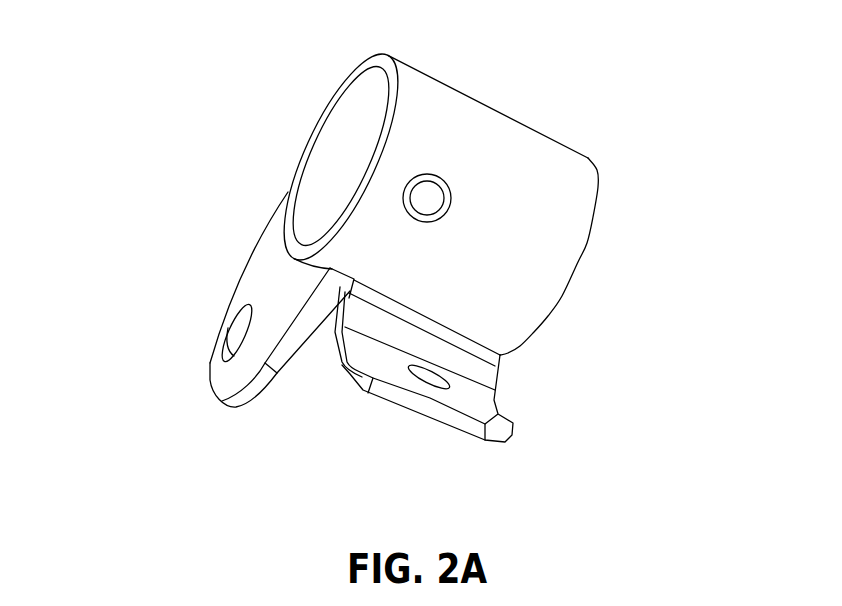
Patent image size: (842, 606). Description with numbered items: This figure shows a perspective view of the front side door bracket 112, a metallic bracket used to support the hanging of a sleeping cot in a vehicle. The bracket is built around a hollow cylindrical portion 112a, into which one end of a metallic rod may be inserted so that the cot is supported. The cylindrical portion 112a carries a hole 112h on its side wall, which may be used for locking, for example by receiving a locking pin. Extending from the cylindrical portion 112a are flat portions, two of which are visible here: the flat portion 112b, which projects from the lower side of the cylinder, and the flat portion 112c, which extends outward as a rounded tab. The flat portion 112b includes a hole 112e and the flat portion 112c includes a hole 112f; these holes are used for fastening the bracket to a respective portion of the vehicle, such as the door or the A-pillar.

The front side door bracket 112 is at (675, 124).
The cylindrical portion 112a is at (452, 116).
The flat portion 112b is at (499, 409).
The flat portion 112c is at (274, 240).
The hole 112e is at (441, 385).
The hole 112f is at (231, 348).
The hole 112h is at (430, 198).